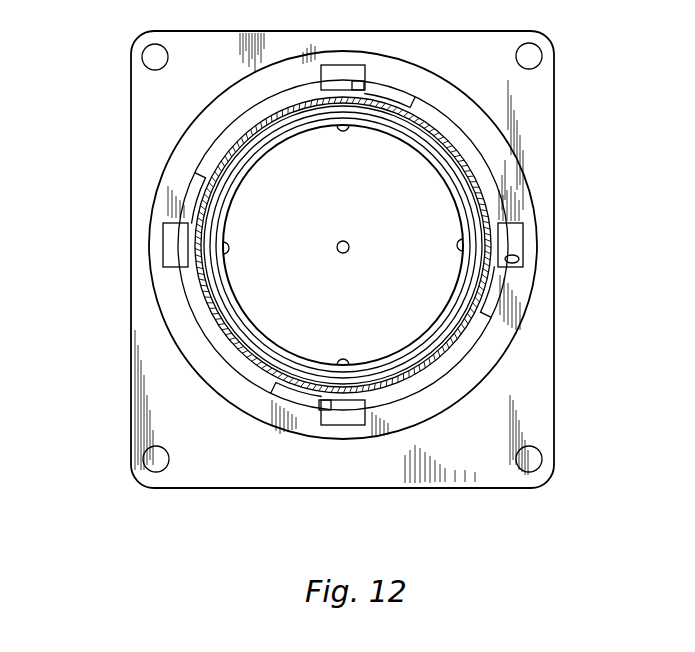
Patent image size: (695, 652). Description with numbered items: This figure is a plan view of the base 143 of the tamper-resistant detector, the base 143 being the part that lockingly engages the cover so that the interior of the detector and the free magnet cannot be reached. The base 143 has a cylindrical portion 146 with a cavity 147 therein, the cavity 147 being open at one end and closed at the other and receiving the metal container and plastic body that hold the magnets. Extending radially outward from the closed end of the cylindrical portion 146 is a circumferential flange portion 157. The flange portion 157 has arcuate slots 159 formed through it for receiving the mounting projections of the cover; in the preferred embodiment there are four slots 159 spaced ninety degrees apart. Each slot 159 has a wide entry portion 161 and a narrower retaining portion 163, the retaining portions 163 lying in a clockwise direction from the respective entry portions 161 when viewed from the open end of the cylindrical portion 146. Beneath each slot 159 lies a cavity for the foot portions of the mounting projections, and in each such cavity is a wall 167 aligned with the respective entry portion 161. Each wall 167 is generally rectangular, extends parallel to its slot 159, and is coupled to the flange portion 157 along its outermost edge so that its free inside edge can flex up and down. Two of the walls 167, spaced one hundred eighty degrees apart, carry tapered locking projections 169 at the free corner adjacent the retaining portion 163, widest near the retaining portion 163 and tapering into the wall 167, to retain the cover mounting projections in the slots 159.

The base 143 is at (131, 81).
The cylindrical portion 146 is at (206, 202).
The cavity 147 is at (236, 288).
The circumferential flange portion 157 is at (165, 412).
The arcuate slot 159 is at (522, 240).
The entry portion 161 is at (519, 261).
The retaining portion 163 is at (488, 323).
The wall 167 is at (338, 68).
The locking projection 169 is at (354, 80).